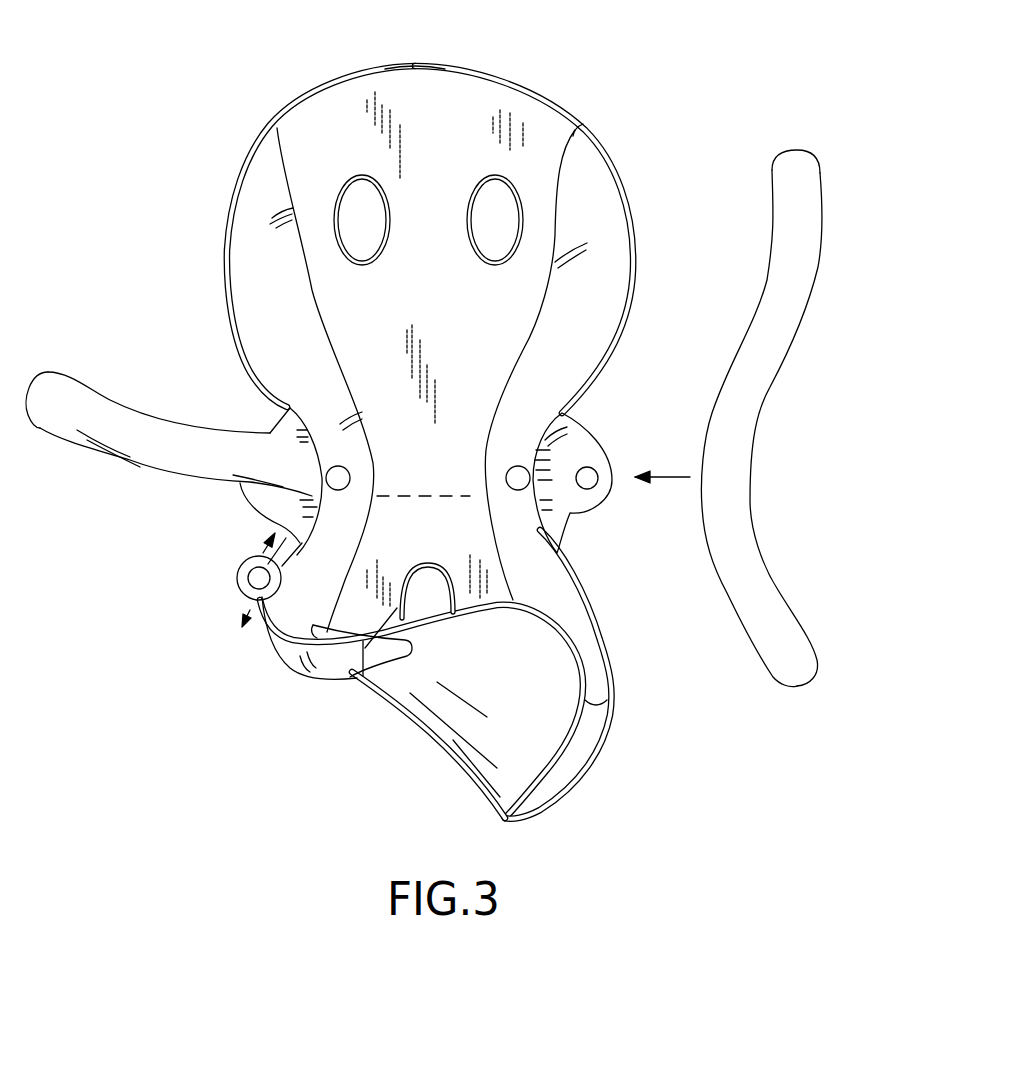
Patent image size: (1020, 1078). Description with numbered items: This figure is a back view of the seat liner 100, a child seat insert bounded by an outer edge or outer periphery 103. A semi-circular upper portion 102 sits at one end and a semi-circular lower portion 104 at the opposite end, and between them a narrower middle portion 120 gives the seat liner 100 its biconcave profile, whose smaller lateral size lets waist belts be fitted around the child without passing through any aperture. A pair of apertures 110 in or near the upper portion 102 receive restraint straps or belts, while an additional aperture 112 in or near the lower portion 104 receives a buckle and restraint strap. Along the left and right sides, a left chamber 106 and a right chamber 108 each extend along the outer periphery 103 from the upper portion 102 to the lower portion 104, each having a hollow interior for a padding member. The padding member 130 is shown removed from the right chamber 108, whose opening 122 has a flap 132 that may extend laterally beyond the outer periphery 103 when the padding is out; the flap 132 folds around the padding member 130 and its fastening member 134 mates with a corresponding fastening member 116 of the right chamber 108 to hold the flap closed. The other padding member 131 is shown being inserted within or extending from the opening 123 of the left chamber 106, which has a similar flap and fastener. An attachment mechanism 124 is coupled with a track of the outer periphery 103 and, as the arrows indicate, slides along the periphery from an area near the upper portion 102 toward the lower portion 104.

The seat liner 100 is at (207, 158).
The upper portion 102 is at (548, 110).
The outer periphery 103 is at (463, 70).
The lower portion 104 is at (567, 767).
The left chamber 106 is at (255, 270).
The right chamber 108 is at (607, 215).
The apertures 110 is at (511, 193).
The additional aperture 112 is at (368, 673).
The fastening member 116 is at (557, 517).
The middle portion 120 is at (226, 401).
The opening 122 is at (566, 390).
The opening 123 is at (344, 505).
The attachment mechanism 124 is at (247, 577).
The padding member 130 is at (807, 192).
The padding member 131 is at (62, 403).
The flap 132 is at (590, 448).
The fastening member 134 is at (595, 481).